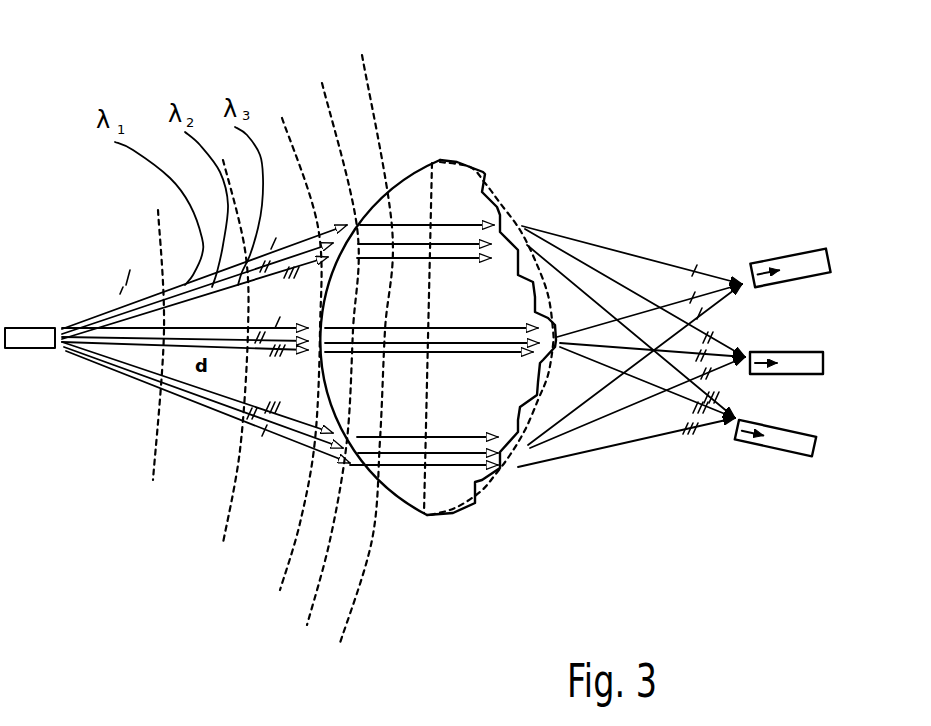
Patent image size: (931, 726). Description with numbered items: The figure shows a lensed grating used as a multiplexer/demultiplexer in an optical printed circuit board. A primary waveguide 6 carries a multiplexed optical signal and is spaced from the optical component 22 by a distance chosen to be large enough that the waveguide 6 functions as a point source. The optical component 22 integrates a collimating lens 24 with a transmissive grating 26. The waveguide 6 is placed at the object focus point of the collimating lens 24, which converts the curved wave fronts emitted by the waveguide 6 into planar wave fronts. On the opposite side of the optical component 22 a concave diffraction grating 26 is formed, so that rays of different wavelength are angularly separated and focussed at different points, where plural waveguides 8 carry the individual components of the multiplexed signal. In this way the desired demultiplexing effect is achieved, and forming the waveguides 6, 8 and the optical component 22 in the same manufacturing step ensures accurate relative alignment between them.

The waveguide 6 is at (36, 343).
The optical component 22 is at (452, 517).
The collimating lens 24 is at (407, 173).
The transmissive grating 26 is at (495, 200).
The waveguides 8 is at (826, 250).